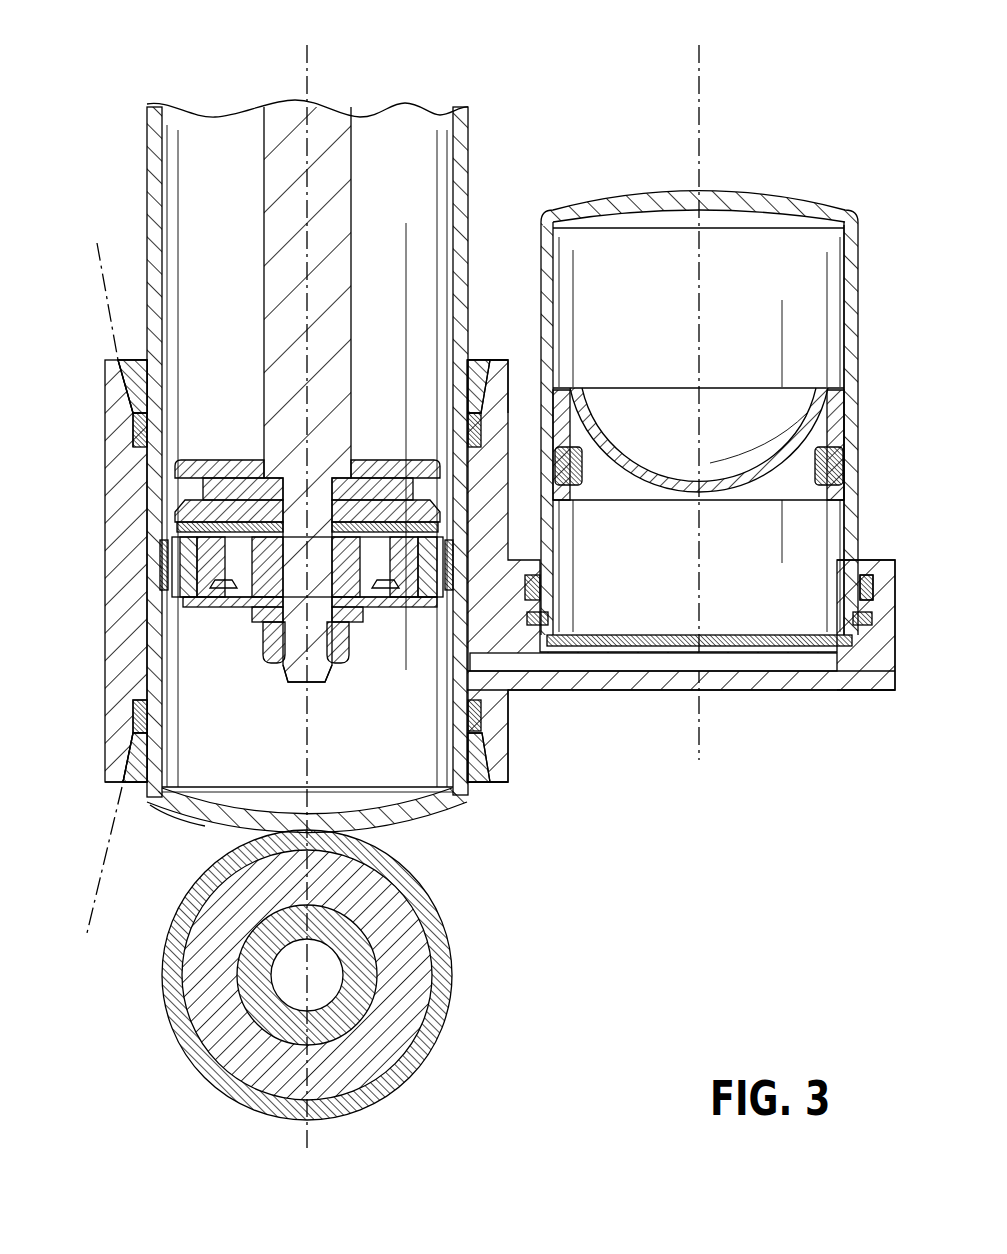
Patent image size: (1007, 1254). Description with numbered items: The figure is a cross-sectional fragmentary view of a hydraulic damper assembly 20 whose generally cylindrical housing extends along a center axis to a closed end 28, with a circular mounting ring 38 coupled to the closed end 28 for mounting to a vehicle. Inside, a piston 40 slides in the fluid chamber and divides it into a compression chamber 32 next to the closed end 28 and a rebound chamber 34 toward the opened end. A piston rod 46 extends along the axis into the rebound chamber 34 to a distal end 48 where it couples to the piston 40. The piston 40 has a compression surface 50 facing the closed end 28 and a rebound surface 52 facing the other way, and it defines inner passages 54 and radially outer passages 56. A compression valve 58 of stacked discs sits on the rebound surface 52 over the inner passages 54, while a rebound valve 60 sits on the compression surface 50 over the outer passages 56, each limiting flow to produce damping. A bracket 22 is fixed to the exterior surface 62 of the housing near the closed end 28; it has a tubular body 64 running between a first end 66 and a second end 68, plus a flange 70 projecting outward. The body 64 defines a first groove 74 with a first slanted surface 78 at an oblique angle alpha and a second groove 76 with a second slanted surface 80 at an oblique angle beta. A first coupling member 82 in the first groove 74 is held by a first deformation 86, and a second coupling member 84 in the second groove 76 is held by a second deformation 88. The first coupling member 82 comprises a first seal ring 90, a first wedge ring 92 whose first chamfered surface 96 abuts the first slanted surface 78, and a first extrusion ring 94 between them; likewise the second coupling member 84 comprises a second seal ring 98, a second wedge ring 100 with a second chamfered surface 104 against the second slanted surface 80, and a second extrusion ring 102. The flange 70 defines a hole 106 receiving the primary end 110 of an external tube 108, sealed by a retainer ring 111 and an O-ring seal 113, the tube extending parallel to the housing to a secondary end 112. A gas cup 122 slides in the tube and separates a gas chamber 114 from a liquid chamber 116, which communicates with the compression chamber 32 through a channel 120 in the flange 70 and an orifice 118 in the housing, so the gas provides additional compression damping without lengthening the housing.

The hydraulic damper assembly 20 is at (70, 120).
The bracket 22 is at (104, 527).
The closed end 28 is at (462, 805).
The compression chamber 32 is at (200, 815).
The rebound chamber 34 is at (160, 140).
The mounting ring 38 is at (452, 998).
The piston 40 is at (170, 560).
The piston rod 46 is at (330, 130).
The distal end 48 is at (316, 655).
The compression surface 50 is at (225, 600).
The rebound surface 52 is at (222, 520).
The inner passages 54 is at (240, 560).
The outer passages 56 is at (180, 580).
The compression valve 58 is at (360, 520).
The rebound valve 60 is at (372, 600).
The exterior surface 62 is at (470, 150).
The body 64 is at (490, 468).
The first end 66 is at (506, 776).
The second end 68 is at (510, 378).
The flange 70 is at (790, 690).
The first groove 74 is at (505, 760).
The second groove 76 is at (140, 385).
The first slanted surface 78 is at (115, 782).
The second slanted surface 80 is at (125, 380).
The first coupling member 82 is at (479, 788).
The second coupling member 84 is at (478, 356).
The first deformation 86 is at (112, 792).
The second deformation 88 is at (110, 350).
The first seal ring 90 is at (135, 705).
The first wedge ring 92 is at (130, 752).
The first extrusion ring 94 is at (136, 725).
The first chamfered surface 96 is at (147, 735).
The second seal ring 98 is at (135, 437).
The second wedge ring 100 is at (464, 392).
The second extrusion ring 102 is at (135, 418).
The second chamfered surface 104 is at (466, 370).
The hole 106 is at (876, 610).
The external tube 108 is at (858, 420).
The primary end 110 is at (862, 645).
The retainer ring 111 is at (540, 618).
The secondary end 112 is at (800, 195).
The O-ring seal 113 is at (872, 590).
The gas chamber 114 is at (845, 268).
The liquid chamber 116 is at (855, 555).
The orifice 118 is at (548, 618).
The channel 120 is at (750, 655).
The gas cup 122 is at (855, 490).